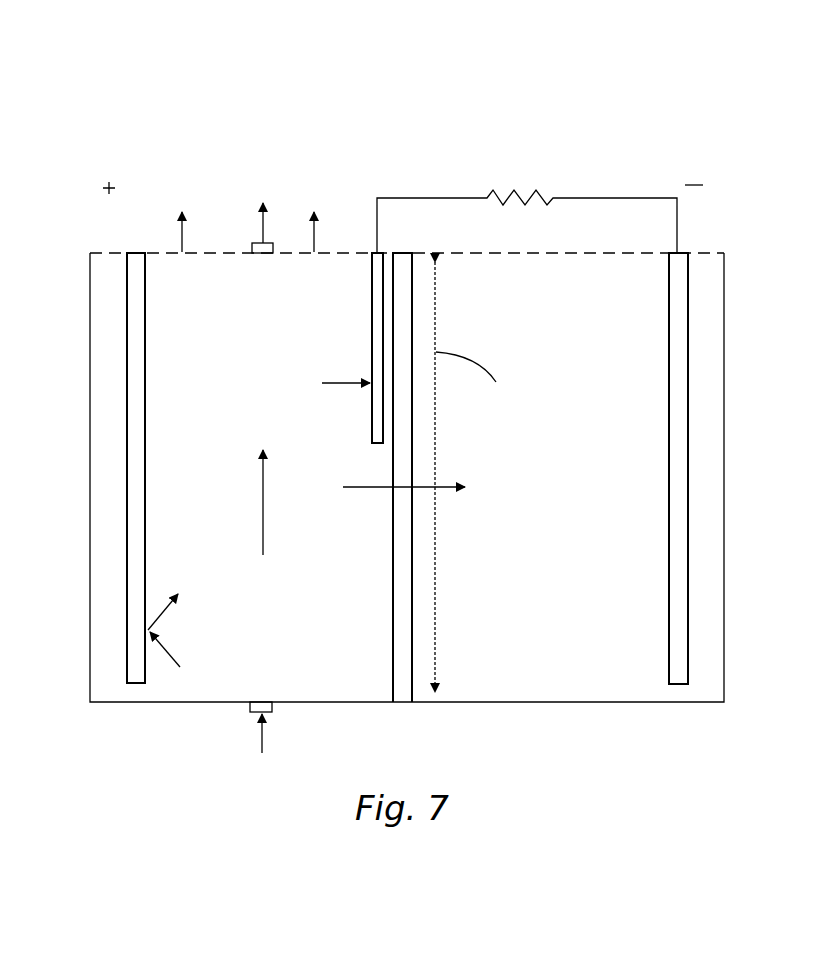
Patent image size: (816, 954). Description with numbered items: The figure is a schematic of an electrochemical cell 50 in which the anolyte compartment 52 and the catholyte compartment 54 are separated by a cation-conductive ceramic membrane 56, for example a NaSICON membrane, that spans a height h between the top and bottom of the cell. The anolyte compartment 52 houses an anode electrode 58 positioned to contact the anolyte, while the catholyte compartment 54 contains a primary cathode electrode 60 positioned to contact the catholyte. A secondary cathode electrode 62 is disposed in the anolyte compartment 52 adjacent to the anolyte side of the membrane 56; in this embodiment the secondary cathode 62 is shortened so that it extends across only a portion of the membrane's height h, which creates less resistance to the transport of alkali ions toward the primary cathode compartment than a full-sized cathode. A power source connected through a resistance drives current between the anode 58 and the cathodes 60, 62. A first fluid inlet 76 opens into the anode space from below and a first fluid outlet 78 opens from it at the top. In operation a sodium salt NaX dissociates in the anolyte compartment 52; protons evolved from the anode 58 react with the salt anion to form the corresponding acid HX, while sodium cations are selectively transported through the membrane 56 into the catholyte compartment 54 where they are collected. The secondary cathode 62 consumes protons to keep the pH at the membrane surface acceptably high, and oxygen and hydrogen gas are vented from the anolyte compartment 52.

The electrochemical cell 50 is at (190, 85).
The anolyte compartment 52 is at (259, 530).
The catholyte compartment 54 is at (434, 561).
The cation-conductive ceramic membrane 56 is at (403, 252).
The anode electrode 58 is at (136, 413).
The primary cathode electrode 60 is at (680, 410).
The secondary cathode electrode 62 is at (372, 305).
The first fluid inlet 76 is at (272, 704).
The first fluid outlet 78 is at (255, 248).